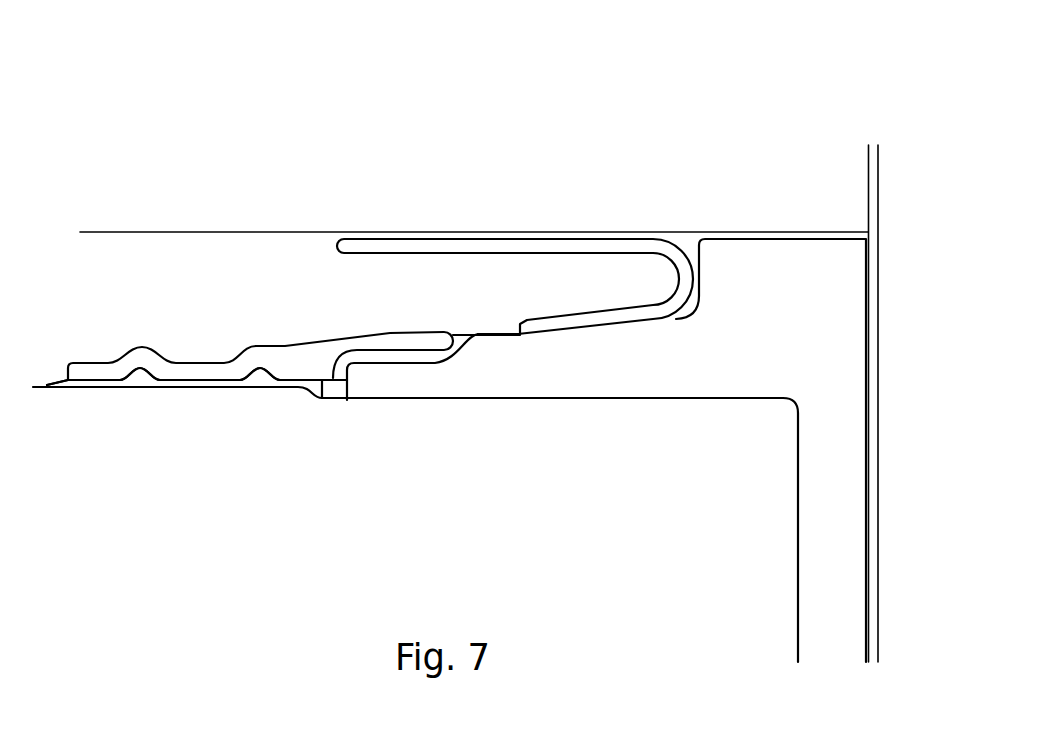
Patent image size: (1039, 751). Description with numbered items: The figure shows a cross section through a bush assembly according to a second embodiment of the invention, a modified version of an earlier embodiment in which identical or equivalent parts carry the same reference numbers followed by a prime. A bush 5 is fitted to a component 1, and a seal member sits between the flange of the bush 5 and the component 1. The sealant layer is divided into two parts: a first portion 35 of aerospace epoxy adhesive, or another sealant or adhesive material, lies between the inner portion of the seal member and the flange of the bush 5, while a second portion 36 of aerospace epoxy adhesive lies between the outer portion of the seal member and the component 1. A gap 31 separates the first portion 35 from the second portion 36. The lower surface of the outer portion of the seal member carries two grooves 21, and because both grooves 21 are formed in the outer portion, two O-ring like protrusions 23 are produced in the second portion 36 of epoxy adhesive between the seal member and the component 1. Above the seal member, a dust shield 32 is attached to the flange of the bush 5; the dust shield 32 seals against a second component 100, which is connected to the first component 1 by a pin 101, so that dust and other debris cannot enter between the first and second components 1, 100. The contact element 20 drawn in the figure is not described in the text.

The component 1 is at (660, 493).
The bush 5 is at (800, 338).
The contact element 20 is at (286, 345).
The grooves 21 is at (248, 373).
The O-ring like protrusions 23 is at (255, 375).
The gap 31 is at (326, 400).
The dust shield 32 is at (352, 243).
The first portion of sealant layer 35 is at (360, 365).
The second portion of sealant layer 36 is at (118, 380).
The second component 100 is at (678, 178).
The pin 101 is at (903, 207).